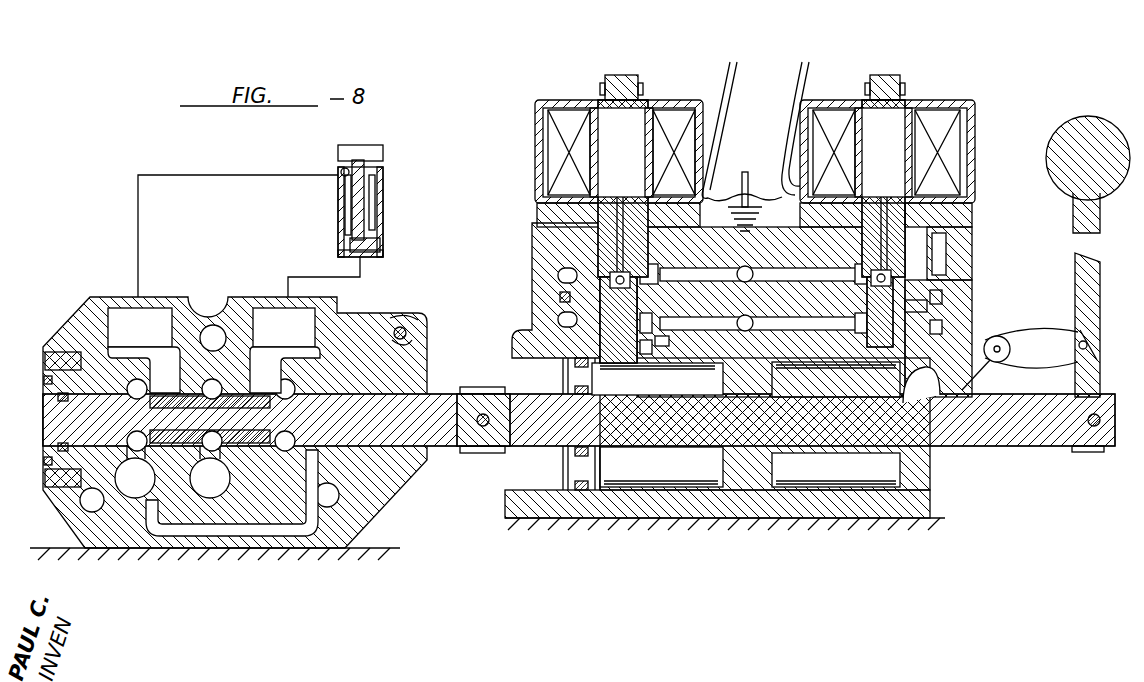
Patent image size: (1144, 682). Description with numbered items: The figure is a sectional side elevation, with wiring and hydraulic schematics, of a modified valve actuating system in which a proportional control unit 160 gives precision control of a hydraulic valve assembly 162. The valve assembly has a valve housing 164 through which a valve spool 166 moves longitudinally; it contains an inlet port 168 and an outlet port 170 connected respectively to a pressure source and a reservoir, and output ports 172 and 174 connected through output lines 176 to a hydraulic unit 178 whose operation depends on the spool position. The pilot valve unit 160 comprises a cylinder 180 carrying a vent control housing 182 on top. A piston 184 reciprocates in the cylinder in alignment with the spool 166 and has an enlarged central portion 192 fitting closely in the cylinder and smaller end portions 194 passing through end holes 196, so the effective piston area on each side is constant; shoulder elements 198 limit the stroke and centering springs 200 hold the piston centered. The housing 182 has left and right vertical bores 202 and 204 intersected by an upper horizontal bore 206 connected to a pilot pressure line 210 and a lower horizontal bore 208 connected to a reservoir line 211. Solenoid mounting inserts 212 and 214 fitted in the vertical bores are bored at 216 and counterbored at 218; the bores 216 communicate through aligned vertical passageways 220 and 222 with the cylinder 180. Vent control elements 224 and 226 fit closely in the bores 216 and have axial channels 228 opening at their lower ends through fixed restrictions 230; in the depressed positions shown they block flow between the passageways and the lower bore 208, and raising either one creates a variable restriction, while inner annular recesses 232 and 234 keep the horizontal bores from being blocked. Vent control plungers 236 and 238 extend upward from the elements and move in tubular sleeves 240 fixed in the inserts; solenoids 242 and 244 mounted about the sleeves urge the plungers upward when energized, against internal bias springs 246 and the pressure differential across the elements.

The proportional control unit 160 is at (1003, 88).
The hydraulic valve assembly 162 is at (264, 585).
The valve housing 164 is at (398, 492).
The valve spool 166 is at (43, 427).
The valve inlet port 168 is at (208, 498).
The valve outlet port 170 is at (135, 492).
The output port 172 is at (127, 320).
The output port 174 is at (268, 298).
The output lines 176 is at (222, 178).
The hydraulic unit 178 is at (338, 210).
The cylinder 180 is at (880, 503).
The vent control housing 182 is at (540, 240).
The piston 184 is at (668, 433).
The enlarged central portion 192 is at (745, 477).
The end portions 194 is at (512, 393).
The end holes 196 is at (562, 458).
The shoulder elements 198 is at (813, 397).
The centering springs 200 is at (620, 487).
The left vertical bore 202 is at (567, 333).
The right vertical bore 204 is at (993, 363).
The upper horizontal bore 206 is at (708, 268).
The lower horizontal bore 208 is at (762, 317).
The pilot pressure line 210 is at (1073, 258).
The reservoir line 211 is at (972, 330).
The solenoid mounting insert 212 is at (548, 215).
The solenoid mounting insert 214 is at (950, 220).
The bore 216 is at (573, 300).
The counterbore 218 is at (560, 257).
The vertical passageway 220 is at (565, 357).
The vertical passageway 222 is at (935, 367).
The vent control element 224 is at (657, 337).
The vent control element 226 is at (848, 312).
The axially extending channels 228 is at (632, 272).
The fixed restrictions 230 is at (618, 320).
The inner annular recess 232 is at (652, 305).
The inner annular recess 234 is at (648, 330).
The vent control plunger 236 is at (668, 107).
The vent control plunger 238 is at (950, 102).
The tubular sleeves 240 is at (627, 137).
The solenoid 242 is at (540, 100).
The solenoid 244 is at (972, 103).
The internal bias springs 246 is at (633, 140).